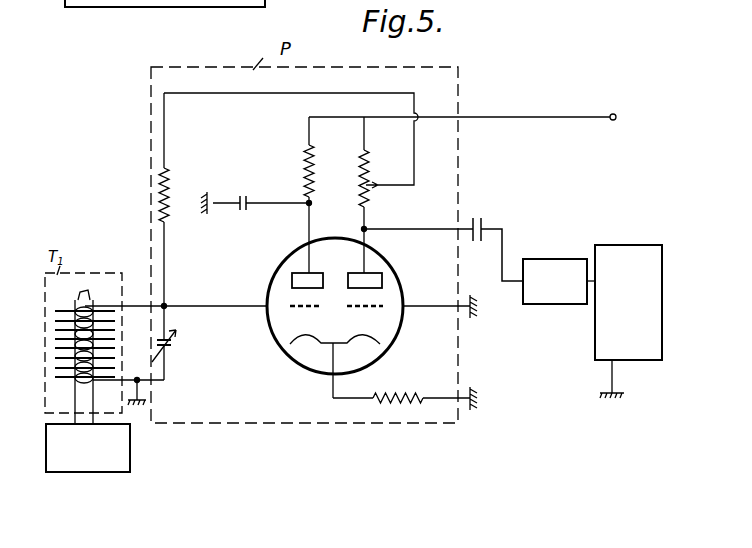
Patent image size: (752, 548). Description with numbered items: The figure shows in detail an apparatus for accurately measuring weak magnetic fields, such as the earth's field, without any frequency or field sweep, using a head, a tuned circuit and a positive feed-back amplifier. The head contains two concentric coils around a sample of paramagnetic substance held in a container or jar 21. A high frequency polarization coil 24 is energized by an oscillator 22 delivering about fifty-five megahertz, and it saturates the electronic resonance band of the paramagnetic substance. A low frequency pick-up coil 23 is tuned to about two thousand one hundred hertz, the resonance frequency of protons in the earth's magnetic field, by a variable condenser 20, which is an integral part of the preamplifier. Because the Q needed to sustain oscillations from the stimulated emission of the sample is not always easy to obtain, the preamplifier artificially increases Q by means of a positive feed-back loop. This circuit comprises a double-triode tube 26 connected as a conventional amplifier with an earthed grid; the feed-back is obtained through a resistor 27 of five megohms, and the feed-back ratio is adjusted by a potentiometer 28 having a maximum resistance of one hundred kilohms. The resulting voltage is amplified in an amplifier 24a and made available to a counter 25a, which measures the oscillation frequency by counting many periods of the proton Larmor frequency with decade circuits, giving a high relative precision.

The variable condenser 20 is at (175, 343).
The container or jar 21 is at (89, 300).
The oscillator 22 is at (133, 444).
The low frequency pick-up coil 23 is at (56, 348).
The high frequency polarization coil 24 is at (56, 319).
The amplifier 24a is at (543, 271).
The counter 25a is at (628, 302).
The double-triode tube 26 is at (313, 357).
The resistor 27 is at (170, 187).
The potentiometer 28 is at (367, 172).